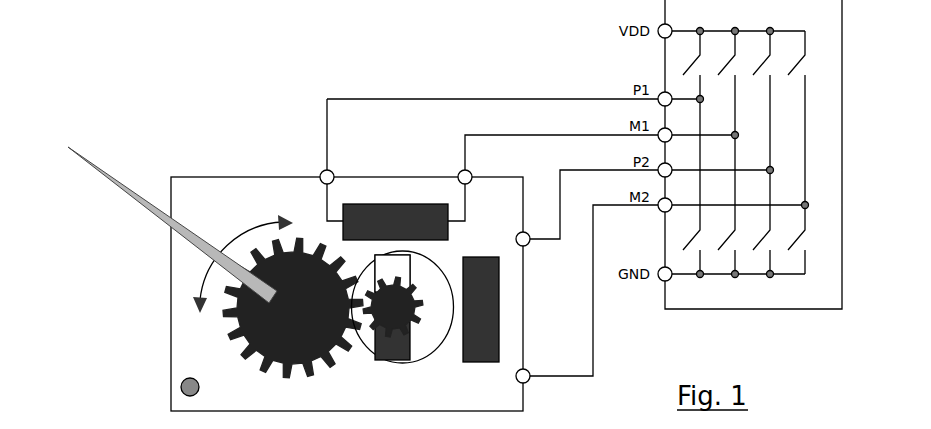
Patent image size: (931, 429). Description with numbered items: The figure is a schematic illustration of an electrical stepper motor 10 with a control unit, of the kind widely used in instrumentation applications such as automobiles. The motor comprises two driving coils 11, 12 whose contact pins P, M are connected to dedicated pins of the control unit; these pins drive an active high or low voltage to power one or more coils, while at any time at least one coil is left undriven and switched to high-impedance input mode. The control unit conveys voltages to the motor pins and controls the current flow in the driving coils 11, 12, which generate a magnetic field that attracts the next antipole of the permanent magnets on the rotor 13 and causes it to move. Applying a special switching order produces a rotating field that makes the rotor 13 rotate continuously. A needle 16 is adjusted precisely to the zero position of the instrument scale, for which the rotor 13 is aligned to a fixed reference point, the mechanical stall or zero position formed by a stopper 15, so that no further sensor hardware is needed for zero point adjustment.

The electrical stepper motor 10 is at (282, 80).
The driving coil 11 is at (382, 203).
The driving coil 12 is at (465, 350).
The rotor 13 is at (378, 348).
The stopper 15 is at (186, 378).
The needle 16 is at (148, 204).